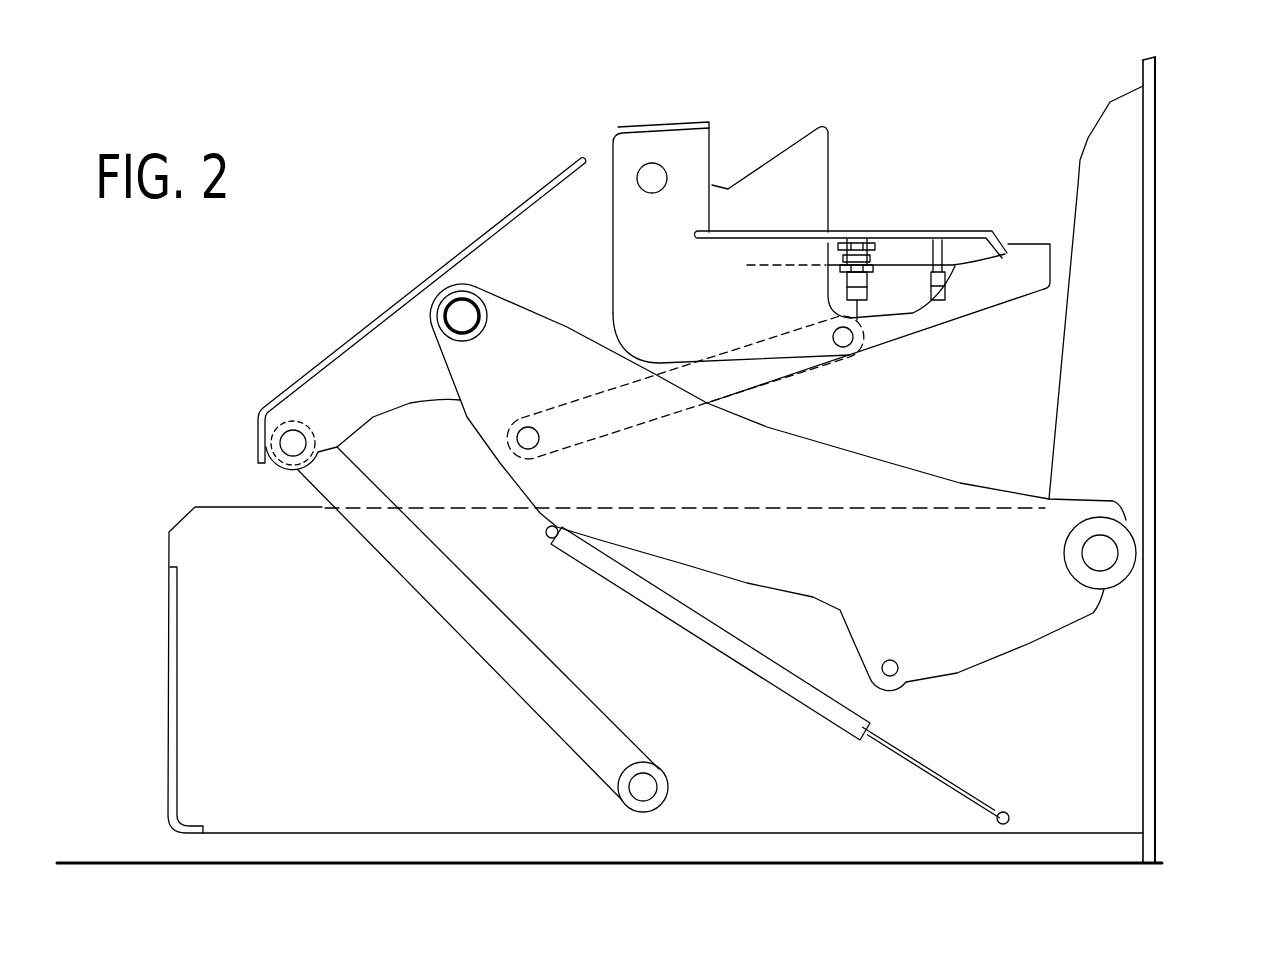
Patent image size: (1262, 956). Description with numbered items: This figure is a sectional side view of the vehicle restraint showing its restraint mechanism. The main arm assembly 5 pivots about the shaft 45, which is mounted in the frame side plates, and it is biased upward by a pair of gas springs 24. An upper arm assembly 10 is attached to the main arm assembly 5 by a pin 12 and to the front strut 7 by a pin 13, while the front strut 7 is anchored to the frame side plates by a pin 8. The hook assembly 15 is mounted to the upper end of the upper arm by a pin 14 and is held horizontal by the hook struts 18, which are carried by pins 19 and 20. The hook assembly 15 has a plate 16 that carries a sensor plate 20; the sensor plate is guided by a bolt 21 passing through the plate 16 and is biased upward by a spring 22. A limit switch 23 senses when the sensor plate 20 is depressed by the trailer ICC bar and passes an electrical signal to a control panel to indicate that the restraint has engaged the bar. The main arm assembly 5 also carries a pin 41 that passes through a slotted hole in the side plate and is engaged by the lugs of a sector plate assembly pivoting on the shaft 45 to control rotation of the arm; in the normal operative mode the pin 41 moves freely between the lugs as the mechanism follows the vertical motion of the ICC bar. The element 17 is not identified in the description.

The main arm assembly 5 is at (877, 458).
The front strut 7 is at (367, 477).
The pin 8 is at (650, 787).
The upper arm assembly 10 is at (467, 253).
The pin 12 is at (460, 319).
The pin 13 is at (293, 443).
The pin 14 is at (652, 179).
The hook assembly 15 is at (1045, 246).
The plate 16 is at (948, 267).
The bracket 17 is at (783, 170).
The hook struts 18 is at (764, 383).
The pin 19 is at (851, 349).
The sensor plate 20 is at (918, 233).
The bolt 21 is at (930, 233).
The spring 22 is at (885, 240).
The limit switch 23 is at (870, 290).
The gas springs 24 is at (817, 703).
The pin 41 is at (897, 667).
The shaft 45 is at (1100, 553).